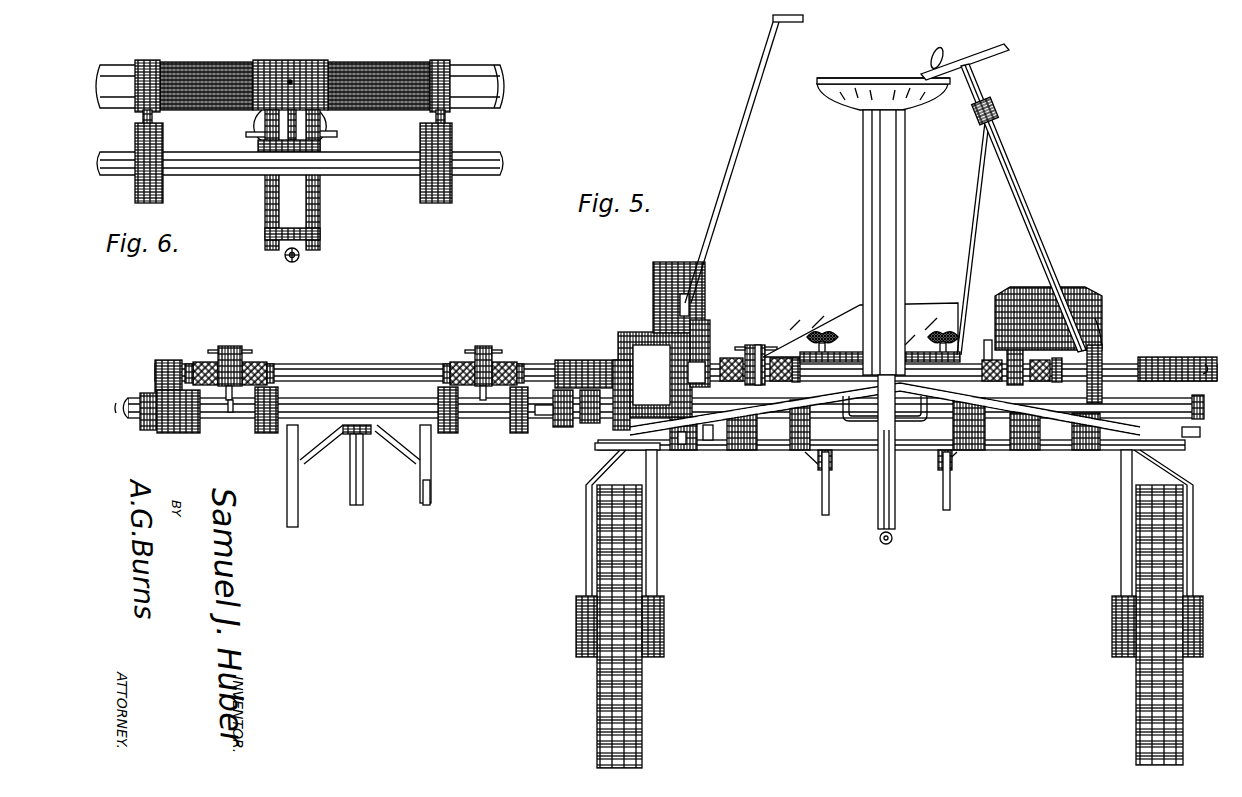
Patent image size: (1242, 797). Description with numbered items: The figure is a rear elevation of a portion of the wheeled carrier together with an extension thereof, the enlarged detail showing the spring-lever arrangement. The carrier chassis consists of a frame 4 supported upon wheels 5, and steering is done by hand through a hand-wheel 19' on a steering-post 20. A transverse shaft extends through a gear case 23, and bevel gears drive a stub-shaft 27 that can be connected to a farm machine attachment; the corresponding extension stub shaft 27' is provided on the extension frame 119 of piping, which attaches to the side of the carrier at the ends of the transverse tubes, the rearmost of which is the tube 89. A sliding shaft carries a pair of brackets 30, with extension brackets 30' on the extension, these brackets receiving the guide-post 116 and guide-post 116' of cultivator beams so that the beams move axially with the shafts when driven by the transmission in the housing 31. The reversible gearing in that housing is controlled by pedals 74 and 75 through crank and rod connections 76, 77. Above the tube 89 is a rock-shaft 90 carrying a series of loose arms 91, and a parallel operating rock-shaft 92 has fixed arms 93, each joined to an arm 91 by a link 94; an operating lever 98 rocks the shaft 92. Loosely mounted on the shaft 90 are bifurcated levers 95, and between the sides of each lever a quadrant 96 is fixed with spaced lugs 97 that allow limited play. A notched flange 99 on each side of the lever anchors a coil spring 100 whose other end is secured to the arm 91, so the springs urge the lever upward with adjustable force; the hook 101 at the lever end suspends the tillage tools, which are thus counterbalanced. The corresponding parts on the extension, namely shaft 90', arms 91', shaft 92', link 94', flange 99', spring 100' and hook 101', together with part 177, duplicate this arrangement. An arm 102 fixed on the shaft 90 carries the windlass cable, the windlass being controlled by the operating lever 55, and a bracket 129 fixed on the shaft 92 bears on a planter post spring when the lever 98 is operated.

In FIG. 5, the frame 4 is at (651, 381).
In FIG. 5, the wheels 5 is at (642, 692).
In FIG. 5, the hand-wheel 19' is at (971, 66).
In FIG. 5, the steering-post 20 is at (1012, 176).
In FIG. 5, the gear case 23 is at (622, 334).
In FIG. 5, the stub-shaft 27 is at (904, 452).
In FIG. 5, the extension stub shaft 27' is at (375, 472).
In FIG. 5, the brackets 30 is at (885, 431).
In FIG. 5, the extension brackets 30' is at (359, 476).
In FIG. 5, the housing 31 is at (1090, 292).
In FIG. 5, the operating lever 55 is at (737, 150).
In FIG. 5, the pedal 74 is at (826, 331).
In FIG. 5, the pedal 75 is at (936, 330).
In FIG. 5, the crank and rod connection 76 is at (970, 312).
In FIG. 5, the crank and rod connection 77 is at (989, 342).
In FIG. 5, the tube 89 is at (1200, 432).
In FIG. 6, the rock-shaft 90 is at (307, 72).
In FIG. 5, the rock-shaft 90 is at (686, 351).
In FIG. 5, the upper shaft 90' is at (392, 362).
In FIG. 6, the arms 91 is at (292, 76).
In FIG. 5, the arms 91 is at (921, 337).
In FIG. 5, the collar 91' is at (383, 354).
In FIG. 6, the operating rock-shaft 92 is at (316, 153).
In FIG. 5, the operating rock-shaft 92 is at (666, 445).
In FIG. 5, the lower shaft 92' is at (313, 433).
In FIG. 5, the arms 93 is at (708, 440).
In FIG. 6, the link 94 is at (313, 172).
In FIG. 5, the link 94 is at (887, 459).
In FIG. 5, the clamp 94' is at (385, 416).
In FIG. 6, the bifurcated levers 95 is at (322, 218).
In FIG. 5, the bifurcated levers 95 is at (758, 352).
In FIG. 6, the quadrant 96 is at (294, 60).
In FIG. 6, the lugs 97 is at (272, 152).
In FIG. 5, the operating lever 98 is at (1098, 326).
In FIG. 6, the notched flange 99 is at (296, 134).
In FIG. 5, the notched flange 99 is at (756, 337).
In FIG. 5, the arm 99' is at (365, 352).
In FIG. 6, the coil spring 100 is at (295, 68).
In FIG. 5, the coil spring 100 is at (880, 344).
In FIG. 5, the spring coil 100' is at (354, 354).
In FIG. 6, the hook 101 is at (309, 267).
In FIG. 5, the roller 101' is at (221, 435).
In FIG. 5, the arm 102 is at (695, 320).
In FIG. 5, the guide-post 116 is at (891, 483).
In FIG. 5, the standard 116' is at (454, 492).
In FIG. 5, the extension frame 119 is at (548, 420).
In FIG. 5, the bracket 129 is at (892, 540).
In FIG. 5, the bolt 177 is at (683, 445).